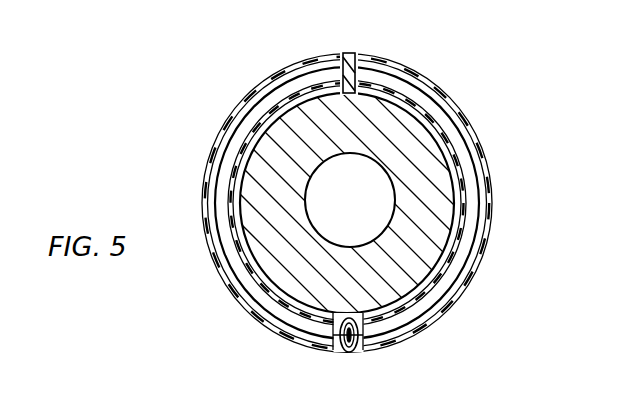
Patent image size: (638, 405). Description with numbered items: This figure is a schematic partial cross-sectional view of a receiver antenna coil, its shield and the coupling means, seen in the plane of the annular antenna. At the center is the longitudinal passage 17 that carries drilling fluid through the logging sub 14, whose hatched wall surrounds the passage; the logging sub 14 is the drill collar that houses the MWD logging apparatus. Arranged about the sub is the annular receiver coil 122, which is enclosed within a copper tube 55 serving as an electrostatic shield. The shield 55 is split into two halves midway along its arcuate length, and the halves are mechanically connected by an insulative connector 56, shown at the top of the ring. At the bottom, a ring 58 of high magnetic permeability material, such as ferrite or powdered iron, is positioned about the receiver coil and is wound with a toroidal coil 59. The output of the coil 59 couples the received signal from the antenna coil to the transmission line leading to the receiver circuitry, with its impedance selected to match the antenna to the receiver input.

The logging sub 14 is at (436, 224).
The longitudinal passage 17 is at (308, 186).
The copper tube 55 is at (442, 90).
The receiver coil 122 is at (481, 181).
The insulative connector 56 is at (348, 52).
The ring 58 is at (337, 352).
The toroidal coil 59 is at (356, 347).